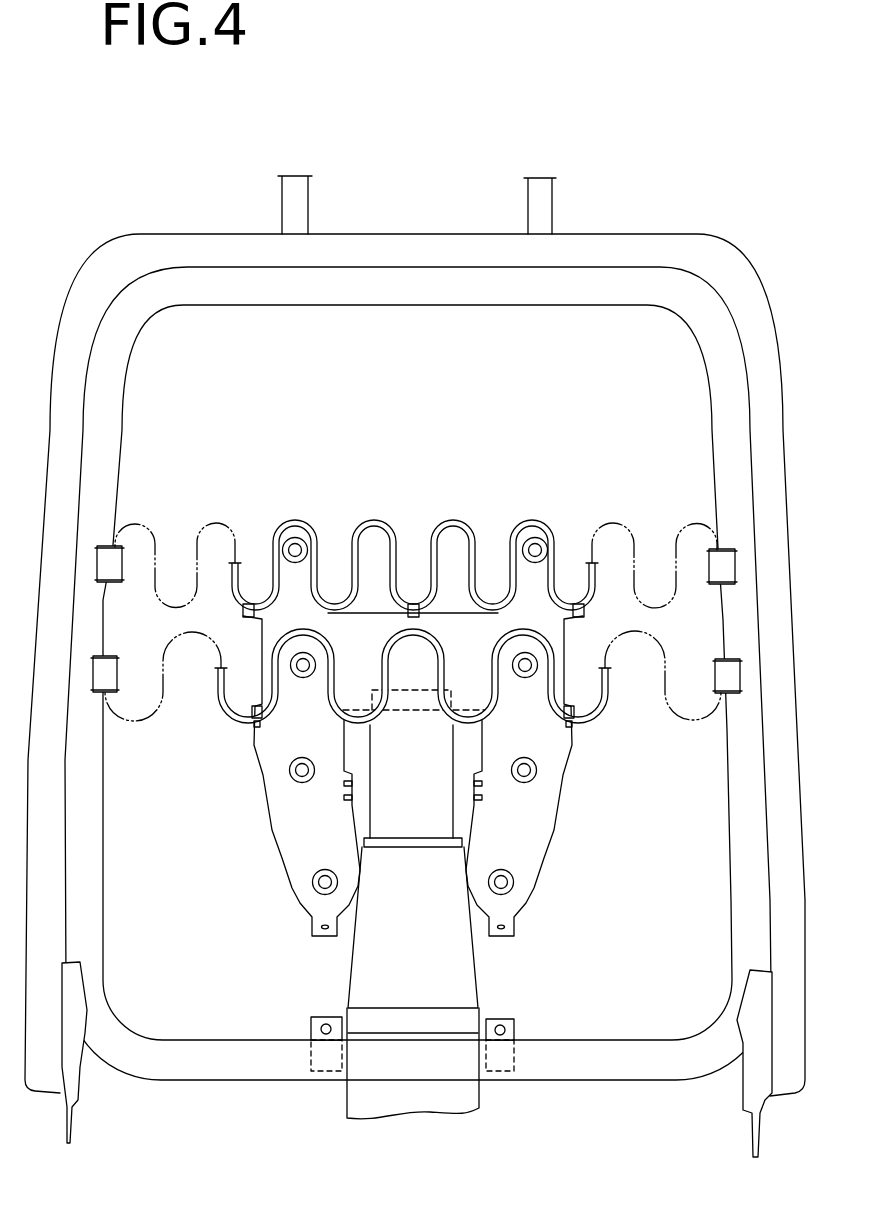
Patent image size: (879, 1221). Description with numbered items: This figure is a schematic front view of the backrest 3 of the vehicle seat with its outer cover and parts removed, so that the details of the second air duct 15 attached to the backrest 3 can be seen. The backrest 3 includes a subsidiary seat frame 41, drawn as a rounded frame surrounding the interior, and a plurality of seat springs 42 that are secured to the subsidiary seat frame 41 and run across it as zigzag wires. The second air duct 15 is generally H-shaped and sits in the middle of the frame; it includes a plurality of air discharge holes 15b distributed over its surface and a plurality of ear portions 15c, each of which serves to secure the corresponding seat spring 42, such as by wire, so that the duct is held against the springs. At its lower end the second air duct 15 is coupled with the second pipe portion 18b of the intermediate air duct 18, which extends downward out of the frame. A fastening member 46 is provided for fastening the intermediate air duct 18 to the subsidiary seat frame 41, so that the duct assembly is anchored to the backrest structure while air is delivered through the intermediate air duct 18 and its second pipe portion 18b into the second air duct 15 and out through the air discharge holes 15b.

The backrest 3 is at (102, 250).
The subsidiary seat frame 41 is at (419, 266).
The seat springs 42 is at (252, 590).
The second air duct 15 is at (279, 866).
The air discharge holes 15b is at (538, 542).
The ear portions 15c is at (246, 600).
The intermediate air duct 18 is at (345, 1104).
The second pipe portion 18b is at (347, 960).
The fastening member 46 is at (516, 1027).